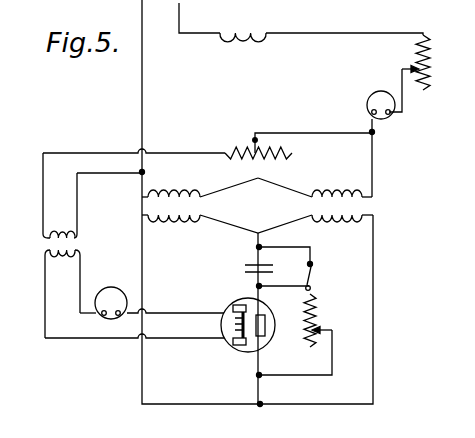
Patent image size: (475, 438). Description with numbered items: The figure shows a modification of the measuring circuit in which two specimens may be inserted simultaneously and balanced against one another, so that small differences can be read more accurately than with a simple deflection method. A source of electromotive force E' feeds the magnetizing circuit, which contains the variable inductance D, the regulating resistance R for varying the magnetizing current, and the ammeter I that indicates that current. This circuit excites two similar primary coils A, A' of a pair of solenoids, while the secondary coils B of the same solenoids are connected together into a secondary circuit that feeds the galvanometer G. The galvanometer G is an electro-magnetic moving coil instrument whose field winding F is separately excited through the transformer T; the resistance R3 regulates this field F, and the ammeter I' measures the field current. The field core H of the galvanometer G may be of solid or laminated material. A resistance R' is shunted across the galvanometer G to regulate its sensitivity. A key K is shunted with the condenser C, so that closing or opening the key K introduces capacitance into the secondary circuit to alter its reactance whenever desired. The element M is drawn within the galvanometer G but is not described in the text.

The source of electromotive force E' is at (185, 18).
The variable inductance D is at (229, 48).
The regulating resistance R is at (430, 62).
The ammeter I is at (394, 102).
The resistance R3 is at (245, 148).
The primary coil A is at (183, 192).
The primary coil A' is at (329, 189).
The secondary coil B is at (147, 214).
The transformer T is at (77, 242).
The ammeter I' is at (152, 292).
The condenser C is at (250, 264).
The key K is at (321, 273).
The resistance R' is at (308, 334).
The galvanometer G is at (240, 298).
The field winding F is at (228, 328).
The field core H is at (241, 346).
The electrode M is at (268, 322).